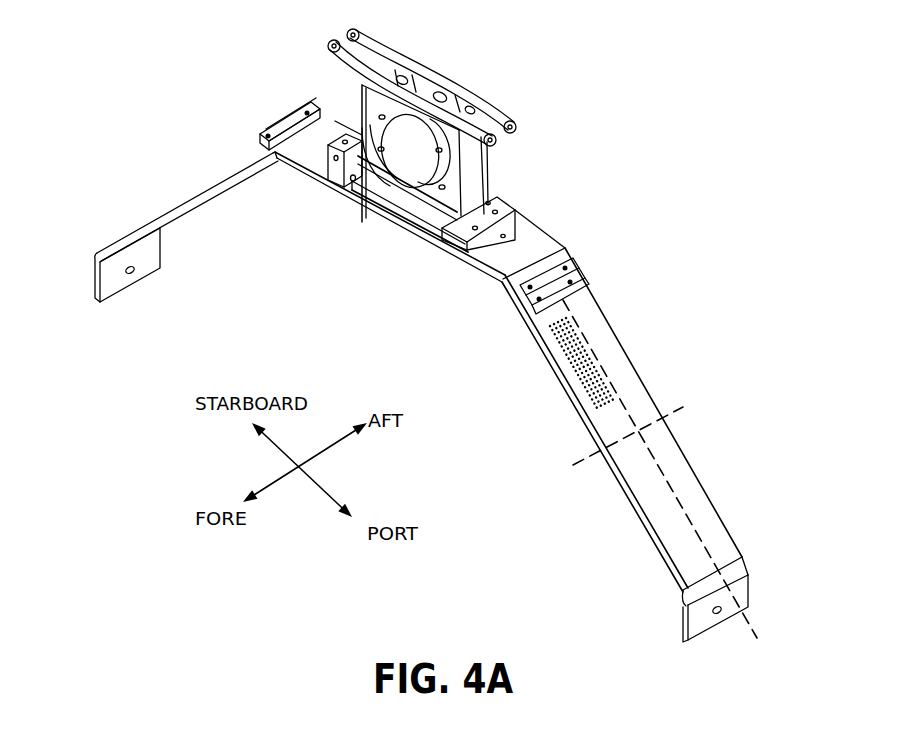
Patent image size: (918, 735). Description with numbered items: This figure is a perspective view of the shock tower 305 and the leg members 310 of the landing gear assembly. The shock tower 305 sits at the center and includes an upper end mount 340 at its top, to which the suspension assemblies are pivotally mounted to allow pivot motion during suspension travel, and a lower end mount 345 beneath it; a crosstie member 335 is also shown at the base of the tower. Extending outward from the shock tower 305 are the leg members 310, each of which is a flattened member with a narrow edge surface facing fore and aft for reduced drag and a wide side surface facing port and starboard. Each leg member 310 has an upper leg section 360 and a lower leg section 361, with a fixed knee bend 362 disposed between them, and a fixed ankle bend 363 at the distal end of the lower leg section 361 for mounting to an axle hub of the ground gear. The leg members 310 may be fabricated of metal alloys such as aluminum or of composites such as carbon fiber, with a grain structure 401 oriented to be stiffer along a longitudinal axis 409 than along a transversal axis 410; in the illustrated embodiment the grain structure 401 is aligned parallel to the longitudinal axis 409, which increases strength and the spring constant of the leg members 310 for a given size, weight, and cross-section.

The shock tower 305 is at (472, 63).
The leg member 310 is at (663, 320).
The crosstie member 335 is at (390, 218).
The upper end mount 340 is at (503, 114).
The lower end mount 345 is at (379, 178).
The upper leg section 360 is at (338, 132).
The lower leg section 361 is at (178, 206).
The fixed knee bend 362 is at (280, 157).
The fixed ankle bend 363 is at (98, 254).
The grain structure 401 is at (560, 370).
The longitudinal axis 409 is at (732, 500).
The transversal axis 410 is at (700, 414).